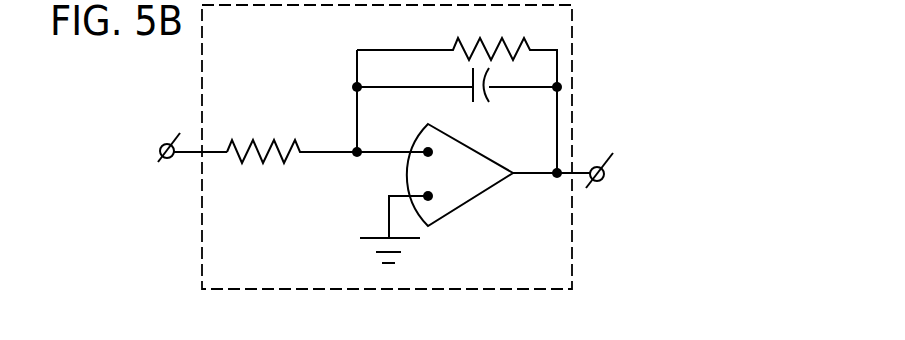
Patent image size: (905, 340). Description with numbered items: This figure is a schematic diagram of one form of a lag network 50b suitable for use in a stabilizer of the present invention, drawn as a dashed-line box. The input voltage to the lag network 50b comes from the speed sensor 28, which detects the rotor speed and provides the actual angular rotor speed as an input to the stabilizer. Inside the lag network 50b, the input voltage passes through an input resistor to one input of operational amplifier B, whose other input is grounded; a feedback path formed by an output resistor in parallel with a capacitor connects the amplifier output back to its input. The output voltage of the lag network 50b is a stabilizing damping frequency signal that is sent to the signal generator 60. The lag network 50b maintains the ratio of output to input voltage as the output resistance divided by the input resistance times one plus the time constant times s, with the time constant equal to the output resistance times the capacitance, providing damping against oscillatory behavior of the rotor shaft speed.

The speed sensor 28 is at (128, 183).
The lag network 50b is at (200, 95).
The signal generator 60 is at (684, 188).